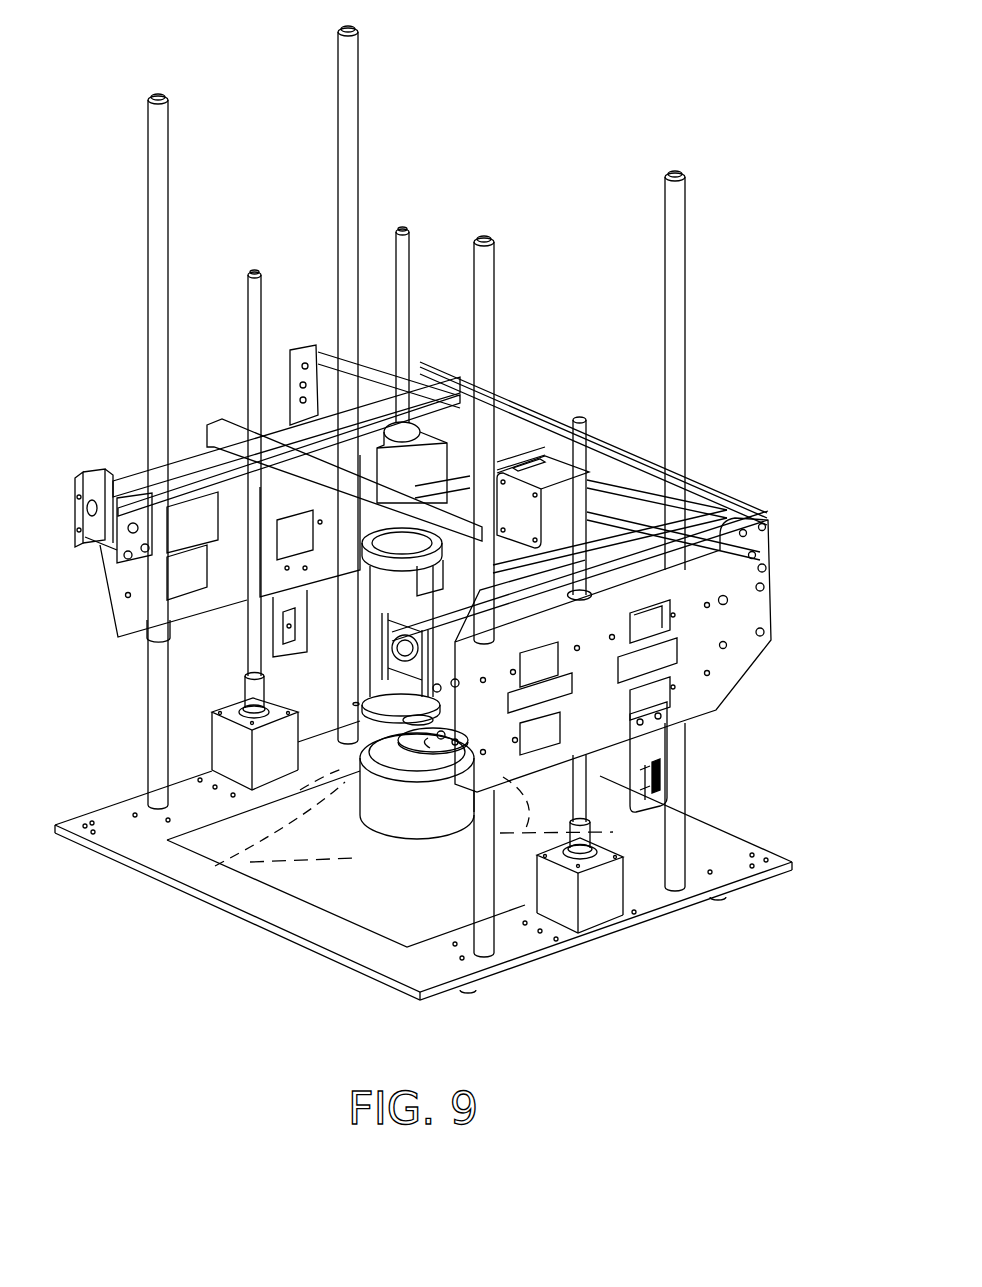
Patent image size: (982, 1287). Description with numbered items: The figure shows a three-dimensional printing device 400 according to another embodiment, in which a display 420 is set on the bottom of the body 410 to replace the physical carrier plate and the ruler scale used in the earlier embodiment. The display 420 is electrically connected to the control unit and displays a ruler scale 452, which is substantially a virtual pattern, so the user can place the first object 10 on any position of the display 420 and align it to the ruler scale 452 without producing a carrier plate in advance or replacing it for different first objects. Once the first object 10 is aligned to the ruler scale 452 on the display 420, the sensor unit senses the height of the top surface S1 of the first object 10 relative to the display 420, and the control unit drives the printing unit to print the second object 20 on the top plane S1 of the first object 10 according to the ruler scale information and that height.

The 3D printing device 400 is at (755, 1045).
The body 410 is at (742, 690).
The display 420 is at (253, 890).
The ruler scale 452 is at (150, 870).
The second object 20 is at (395, 768).
The first object 10 is at (428, 823).
The top surface S1 is at (352, 706).